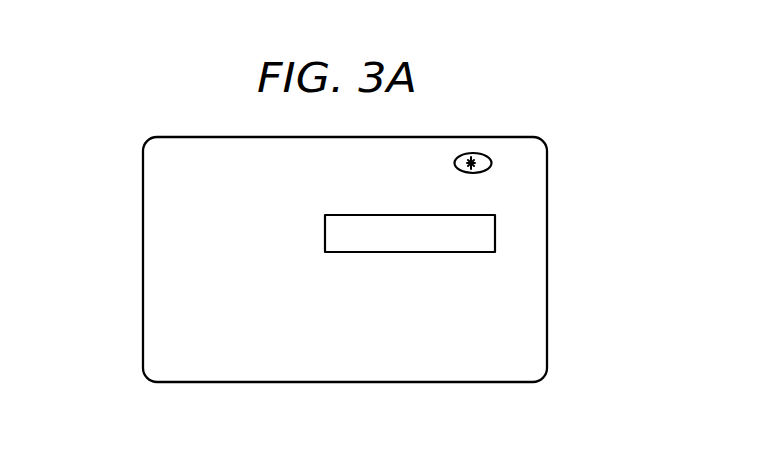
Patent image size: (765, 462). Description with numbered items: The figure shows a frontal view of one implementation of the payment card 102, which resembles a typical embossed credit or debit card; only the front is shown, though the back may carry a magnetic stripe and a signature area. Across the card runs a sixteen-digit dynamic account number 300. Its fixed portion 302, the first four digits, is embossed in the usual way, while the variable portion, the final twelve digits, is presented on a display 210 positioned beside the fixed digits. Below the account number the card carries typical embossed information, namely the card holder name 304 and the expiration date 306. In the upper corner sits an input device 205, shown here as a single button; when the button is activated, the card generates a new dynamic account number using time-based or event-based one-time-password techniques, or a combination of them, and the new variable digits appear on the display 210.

The payment card 102 is at (143, 151).
The input device 205 is at (492, 163).
The display 210 is at (495, 237).
The dynamic account number 300 is at (252, 216).
The fixed portion 302 is at (320, 244).
The card holder name 304 is at (328, 332).
The expiration date 306 is at (470, 332).